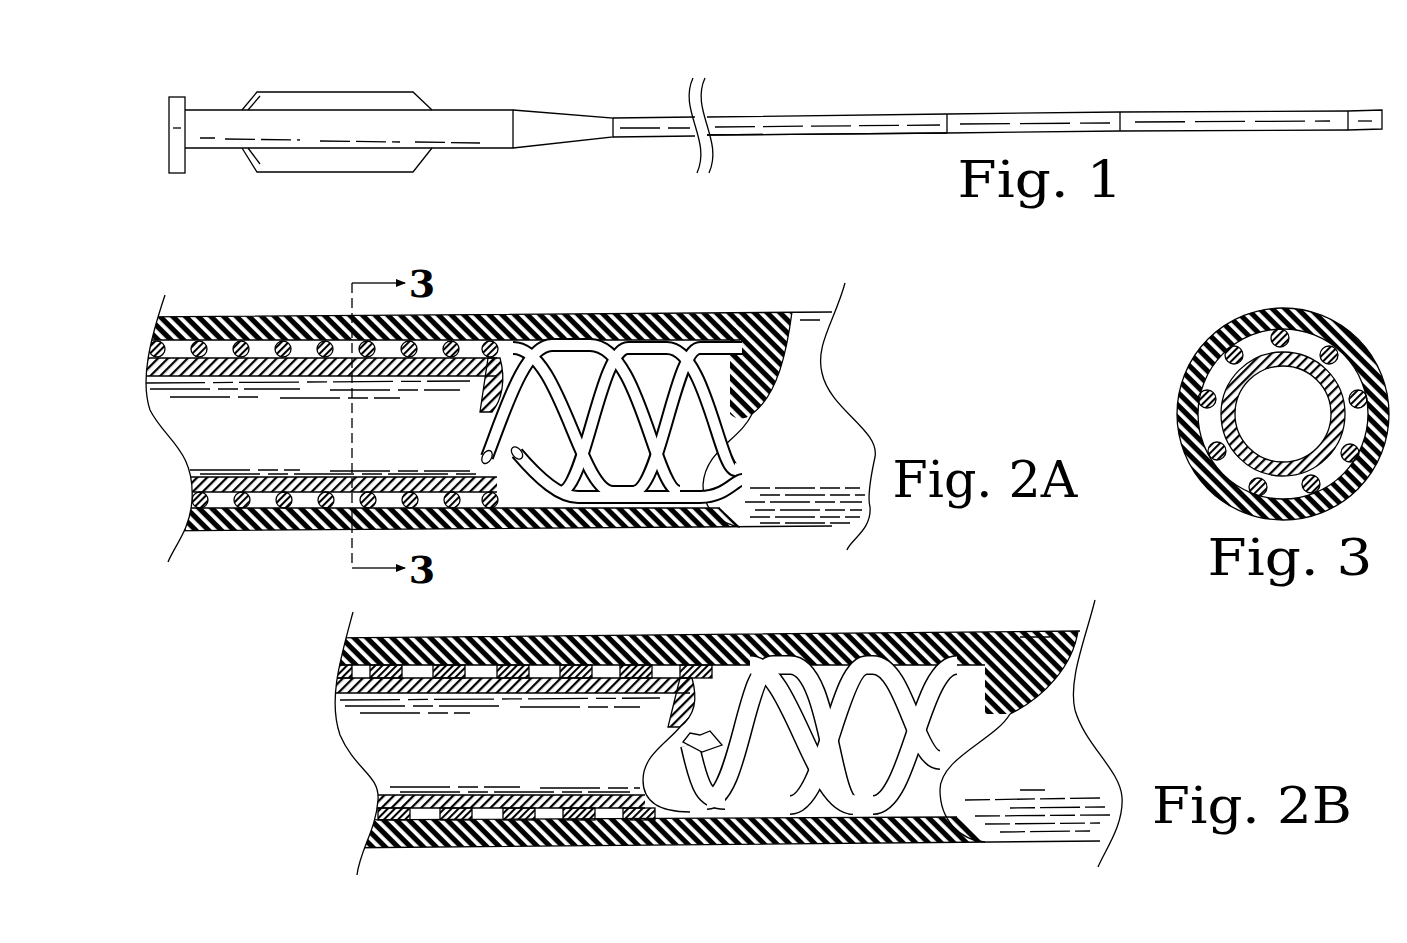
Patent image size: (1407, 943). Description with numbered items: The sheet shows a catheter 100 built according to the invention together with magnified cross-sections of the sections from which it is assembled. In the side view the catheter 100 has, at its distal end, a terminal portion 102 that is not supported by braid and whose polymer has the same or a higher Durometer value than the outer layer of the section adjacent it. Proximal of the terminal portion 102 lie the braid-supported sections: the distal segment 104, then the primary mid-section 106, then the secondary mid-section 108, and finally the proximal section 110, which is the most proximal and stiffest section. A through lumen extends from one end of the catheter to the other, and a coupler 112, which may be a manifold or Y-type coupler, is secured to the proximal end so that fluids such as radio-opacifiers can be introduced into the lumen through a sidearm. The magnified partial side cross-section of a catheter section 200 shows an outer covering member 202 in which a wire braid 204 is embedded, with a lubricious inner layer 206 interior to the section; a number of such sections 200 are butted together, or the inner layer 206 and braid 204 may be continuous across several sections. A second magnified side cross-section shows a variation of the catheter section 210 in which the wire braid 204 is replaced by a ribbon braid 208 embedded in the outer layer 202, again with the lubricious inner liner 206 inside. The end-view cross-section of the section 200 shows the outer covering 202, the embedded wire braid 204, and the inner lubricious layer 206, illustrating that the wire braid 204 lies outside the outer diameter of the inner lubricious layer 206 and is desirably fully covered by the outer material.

In FIG. 1, the catheter 100 is at (775, 110).
In FIG. 1, the terminal portion 102 is at (1368, 108).
In FIG. 1, the distal segment 104 is at (1235, 133).
In FIG. 1, the primary mid-section 106 is at (1055, 110).
In FIG. 1, the secondary mid-section 108 is at (825, 138).
In FIG. 1, the proximal section 110 is at (767, 113).
In FIG. 1, the coupler 112 is at (210, 110).
In FIG. 2A, the catheter section 200 is at (507, 404).
In FIG. 3, the catheter section 200 is at (1231, 391).
In FIG. 2A, the outer covering member 202 is at (598, 312).
In FIG. 2B, the outer covering member 202 is at (521, 637).
In FIG. 3, the outer covering member 202 is at (1196, 342).
In FIG. 2A, the wire braid 204 is at (453, 312).
In FIG. 3, the wire braid 204 is at (1283, 334).
In FIG. 2A, the lubricious inner layer 206 is at (262, 350).
In FIG. 2B, the lubricious inner layer 206 is at (378, 797).
In FIG. 3, the lubricious inner layer 206 is at (1285, 462).
In FIG. 2B, the ribbon braid 208 is at (638, 668).
In FIG. 2B, the catheter section 210 is at (698, 718).